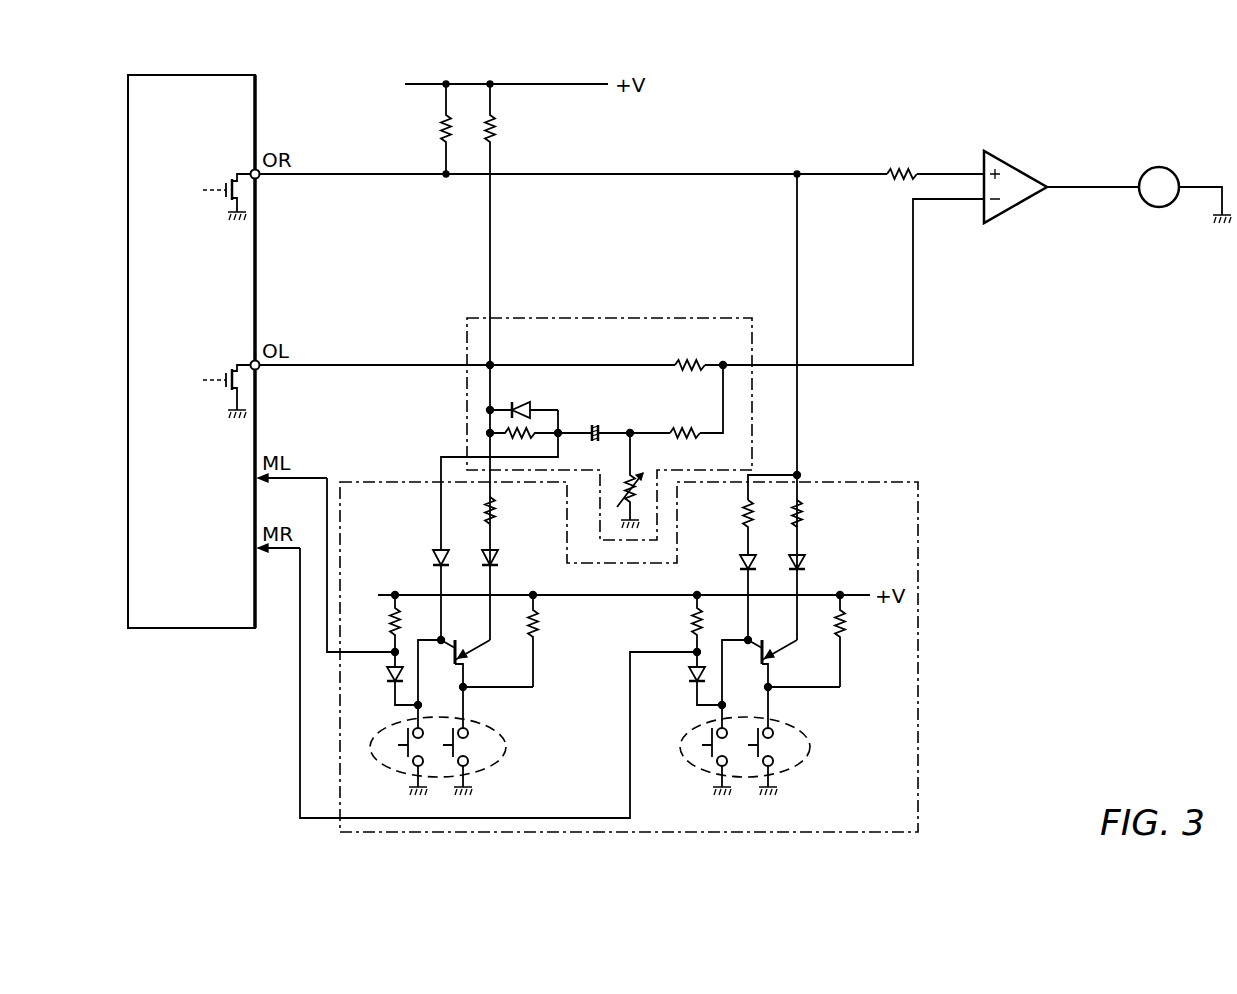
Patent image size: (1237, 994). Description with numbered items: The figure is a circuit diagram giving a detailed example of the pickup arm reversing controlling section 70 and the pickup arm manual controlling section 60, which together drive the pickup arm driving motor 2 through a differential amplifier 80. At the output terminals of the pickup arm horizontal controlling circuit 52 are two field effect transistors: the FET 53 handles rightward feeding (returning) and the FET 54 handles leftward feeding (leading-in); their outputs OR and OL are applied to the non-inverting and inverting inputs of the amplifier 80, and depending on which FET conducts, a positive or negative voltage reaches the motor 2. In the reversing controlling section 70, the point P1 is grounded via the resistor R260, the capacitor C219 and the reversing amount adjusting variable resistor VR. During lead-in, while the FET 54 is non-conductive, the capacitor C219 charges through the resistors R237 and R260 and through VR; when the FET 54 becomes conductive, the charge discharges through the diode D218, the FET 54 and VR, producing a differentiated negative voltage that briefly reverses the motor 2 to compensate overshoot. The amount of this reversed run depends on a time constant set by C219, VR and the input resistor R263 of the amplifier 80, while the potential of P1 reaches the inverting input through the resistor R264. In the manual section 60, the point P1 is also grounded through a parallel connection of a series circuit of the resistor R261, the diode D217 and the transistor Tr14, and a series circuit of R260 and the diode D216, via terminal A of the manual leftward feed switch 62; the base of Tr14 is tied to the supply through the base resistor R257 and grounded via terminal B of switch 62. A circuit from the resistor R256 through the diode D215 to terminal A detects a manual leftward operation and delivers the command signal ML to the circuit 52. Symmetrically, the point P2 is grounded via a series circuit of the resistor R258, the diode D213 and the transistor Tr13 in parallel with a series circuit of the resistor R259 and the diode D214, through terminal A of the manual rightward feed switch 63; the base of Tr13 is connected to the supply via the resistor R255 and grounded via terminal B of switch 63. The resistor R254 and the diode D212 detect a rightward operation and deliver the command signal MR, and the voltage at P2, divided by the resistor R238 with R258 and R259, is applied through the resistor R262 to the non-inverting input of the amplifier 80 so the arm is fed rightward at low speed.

The pickup arm horizontal controlling circuit 52 is at (258, 92).
The field effect transistor 53 is at (226, 185).
The field effect transistor 54 is at (222, 374).
The pickup arm manual controlling section 60 is at (918, 668).
The pickup arm manual switch 62 is at (500, 761).
The pickup arm manual switch 63 is at (805, 760).
The pickup arm reversing controlling section 70 is at (600, 318).
The differential amplifier 80 is at (1018, 212).
The pickup arm driving motor 2 is at (1159, 207).
The resistor R238 is at (441, 132).
The resistor R237 is at (497, 132).
The resistor R262 is at (903, 166).
The resistor R264 is at (692, 347).
The input resistor R263 is at (685, 425).
The resistor R260 is at (524, 446).
The resistor R261 is at (495, 508).
The resistor R256 is at (390, 620).
The base resistor R257 is at (538, 622).
The resistor R259 is at (743, 510).
The resistor R258 is at (802, 508).
The resistor R254 is at (692, 620).
The resistor R255 is at (865, 641).
The diode D218 is at (522, 402).
The diode D216 is at (433, 558).
The diode D217 is at (498, 558).
The diode D215 is at (388, 676).
The diode D214 is at (740, 562).
The diode D213 is at (805, 562).
The diode D212 is at (692, 676).
The capacitor C219 is at (595, 424).
The reversing amount adjusting variable resistor VR is at (636, 480).
The point P1 is at (492, 362).
The point P2 is at (797, 174).
The transistor Tr14 is at (465, 668).
The transistor Tr13 is at (770, 668).